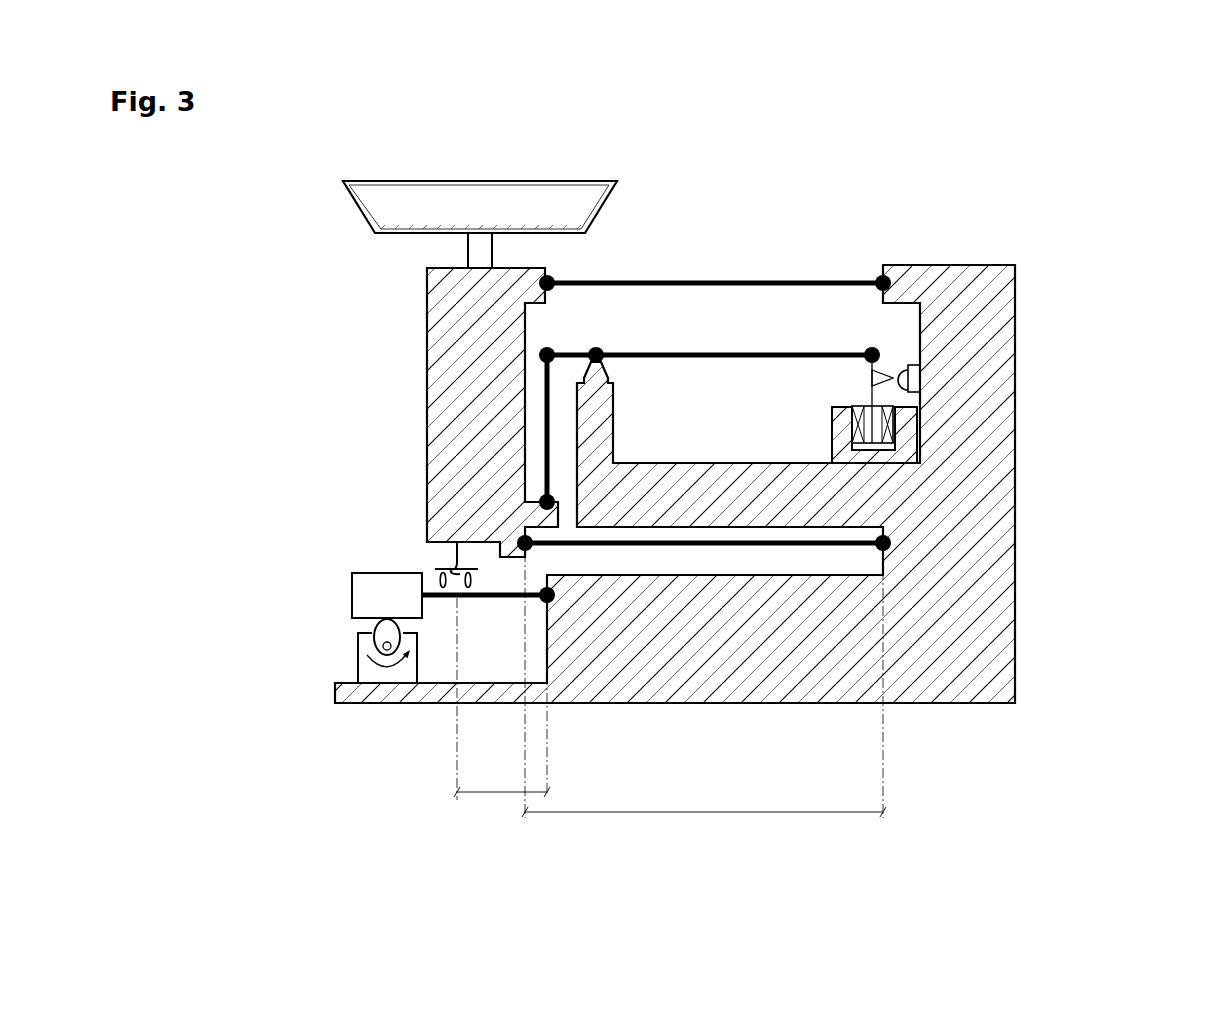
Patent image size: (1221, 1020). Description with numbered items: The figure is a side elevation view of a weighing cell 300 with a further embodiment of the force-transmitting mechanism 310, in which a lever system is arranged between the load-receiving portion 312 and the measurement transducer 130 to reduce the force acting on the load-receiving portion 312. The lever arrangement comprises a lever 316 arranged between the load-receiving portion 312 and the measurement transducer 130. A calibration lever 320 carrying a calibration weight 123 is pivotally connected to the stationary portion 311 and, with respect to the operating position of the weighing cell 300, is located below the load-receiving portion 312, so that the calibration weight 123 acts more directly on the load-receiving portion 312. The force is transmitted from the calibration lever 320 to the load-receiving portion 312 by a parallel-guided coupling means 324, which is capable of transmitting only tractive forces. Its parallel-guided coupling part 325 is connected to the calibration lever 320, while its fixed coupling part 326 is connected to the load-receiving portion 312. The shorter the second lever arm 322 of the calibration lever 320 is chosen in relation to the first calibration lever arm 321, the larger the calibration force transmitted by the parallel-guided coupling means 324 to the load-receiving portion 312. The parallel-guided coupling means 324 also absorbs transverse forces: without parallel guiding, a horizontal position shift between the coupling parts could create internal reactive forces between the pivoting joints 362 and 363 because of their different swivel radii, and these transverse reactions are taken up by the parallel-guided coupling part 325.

The weighing cell 300 is at (1040, 269).
The force-transmitting mechanism 310 is at (764, 326).
The stationary portion 311 is at (972, 623).
The load-receiving portion 312 is at (483, 418).
The lever 316 is at (683, 353).
The pivoting joint 362 is at (521, 540).
The pivoting joint 363 is at (547, 603).
The calibration lever 320 is at (471, 621).
The first calibration lever arm 321 is at (433, 598).
The second lever arm 322 is at (507, 598).
The parallel-guided coupling means 324 is at (418, 557).
The parallel-guided coupling part 325 is at (433, 571).
The fixed coupling part 326 is at (453, 552).
The calibration weight 123 is at (368, 600).
The measurement transducer 130 is at (940, 424).